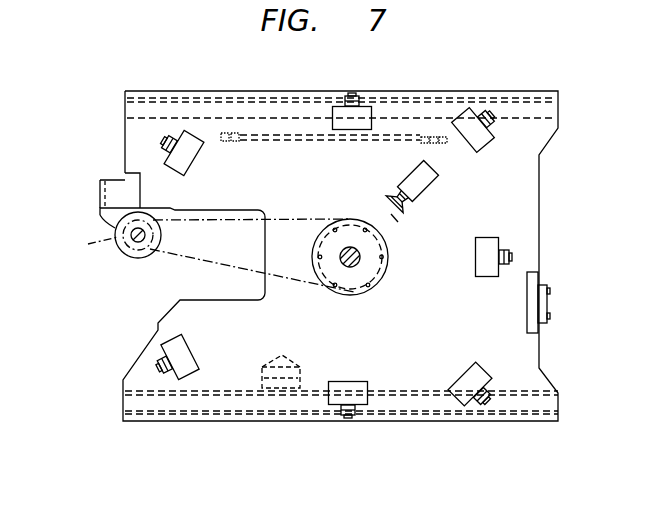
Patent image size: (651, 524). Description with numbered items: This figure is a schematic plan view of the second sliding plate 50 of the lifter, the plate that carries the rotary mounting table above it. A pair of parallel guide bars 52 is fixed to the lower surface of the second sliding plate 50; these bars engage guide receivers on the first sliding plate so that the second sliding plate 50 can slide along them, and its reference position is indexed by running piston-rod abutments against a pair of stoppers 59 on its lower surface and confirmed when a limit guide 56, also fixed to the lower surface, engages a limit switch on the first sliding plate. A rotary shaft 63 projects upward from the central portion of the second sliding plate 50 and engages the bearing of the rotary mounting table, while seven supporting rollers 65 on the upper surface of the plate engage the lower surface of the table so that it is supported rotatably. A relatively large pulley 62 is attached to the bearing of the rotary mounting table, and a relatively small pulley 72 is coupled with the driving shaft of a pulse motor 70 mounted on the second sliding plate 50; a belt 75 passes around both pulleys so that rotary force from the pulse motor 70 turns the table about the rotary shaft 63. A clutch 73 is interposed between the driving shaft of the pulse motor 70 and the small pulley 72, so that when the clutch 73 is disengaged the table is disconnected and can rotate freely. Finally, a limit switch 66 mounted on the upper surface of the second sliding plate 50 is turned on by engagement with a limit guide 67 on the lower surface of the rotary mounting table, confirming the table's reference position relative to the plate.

The second sliding plate 50 is at (125, 132).
The guide bars 52 is at (198, 97).
The limit guide 56 is at (293, 364).
The stoppers 59 is at (100, 206).
The relatively large pulley 62 is at (319, 289).
The rotary shaft 63 is at (358, 262).
The supporting rollers 65 is at (163, 137).
The limit switch 66 is at (441, 187).
The limit guide 67 is at (398, 222).
The pulse motor 70 is at (122, 252).
The relatively small pulley 72 is at (155, 256).
The clutch 73 is at (129, 237).
The belt 75 is at (310, 221).